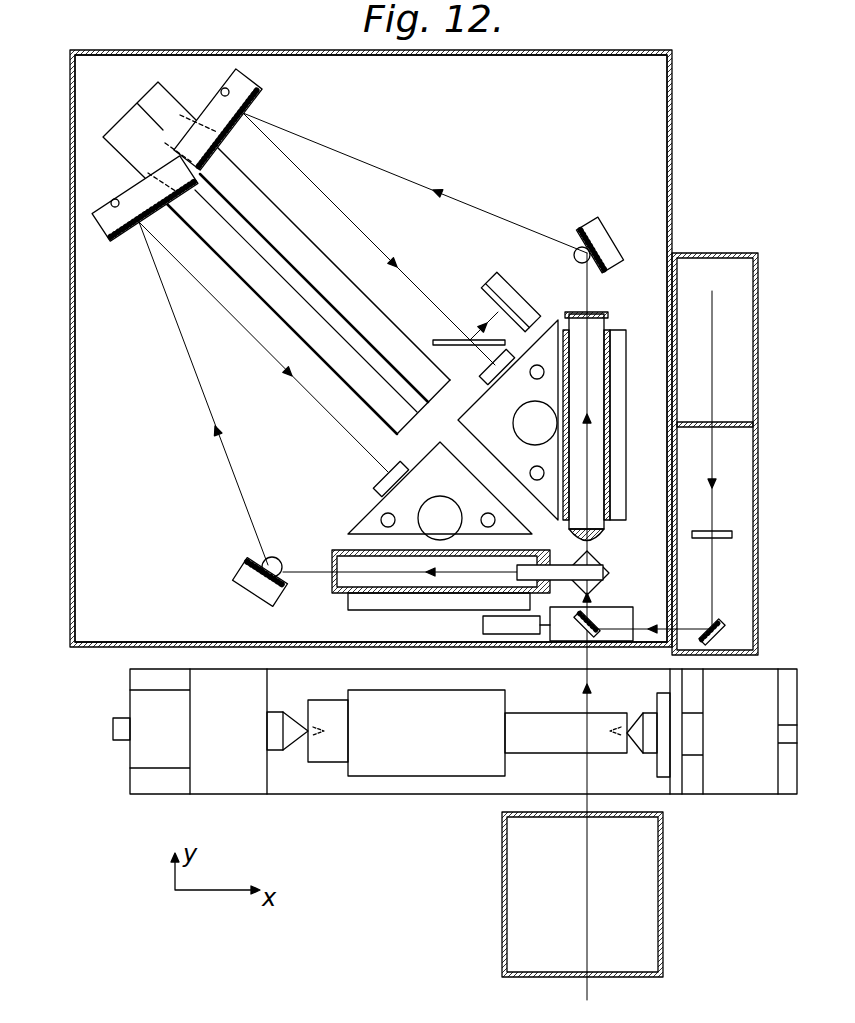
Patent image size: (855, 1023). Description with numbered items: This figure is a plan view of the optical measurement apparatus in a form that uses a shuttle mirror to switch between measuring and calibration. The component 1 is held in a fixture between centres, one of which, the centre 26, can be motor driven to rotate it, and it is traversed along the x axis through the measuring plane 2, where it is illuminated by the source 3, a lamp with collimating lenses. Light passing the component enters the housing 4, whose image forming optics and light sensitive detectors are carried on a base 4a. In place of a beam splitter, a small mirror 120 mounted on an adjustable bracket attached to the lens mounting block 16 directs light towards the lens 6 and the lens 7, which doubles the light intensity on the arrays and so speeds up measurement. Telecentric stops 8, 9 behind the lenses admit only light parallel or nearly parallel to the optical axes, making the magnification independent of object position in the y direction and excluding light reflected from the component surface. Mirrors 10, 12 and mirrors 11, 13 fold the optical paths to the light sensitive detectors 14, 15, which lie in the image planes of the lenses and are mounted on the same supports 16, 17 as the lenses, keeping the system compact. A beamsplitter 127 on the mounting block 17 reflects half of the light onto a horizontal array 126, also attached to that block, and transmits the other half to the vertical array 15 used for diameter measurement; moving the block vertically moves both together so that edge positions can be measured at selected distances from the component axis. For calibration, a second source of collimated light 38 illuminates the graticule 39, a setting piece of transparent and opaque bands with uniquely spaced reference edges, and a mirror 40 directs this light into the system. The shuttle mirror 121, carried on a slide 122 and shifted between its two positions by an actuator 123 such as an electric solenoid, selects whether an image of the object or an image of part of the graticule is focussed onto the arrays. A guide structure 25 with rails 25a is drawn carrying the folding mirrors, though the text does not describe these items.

The component 1 is at (415, 753).
The measuring plane 2 is at (587, 995).
The source 3 is at (502, 887).
The housing 4 is at (107, 644).
The base 4a is at (132, 560).
The lens 6 is at (578, 583).
The lens 7 is at (594, 532).
The telecentric stop 8 is at (332, 568).
The telecentric stop 9 is at (591, 313).
The mirror 10 is at (282, 590).
The mirror 11 is at (582, 230).
The mirror 12 is at (178, 203).
The mirror 13 is at (212, 158).
The light sensitive detector 14 is at (393, 487).
The light sensitive detector 15 is at (488, 380).
The support 16 is at (435, 465).
The support 17 is at (482, 410).
The mirror mount 25 is at (172, 122).
The guide rails 25a is at (290, 316).
The centre 26 is at (240, 790).
The second source of collimated light 38 is at (729, 295).
The graticule 39 is at (722, 530).
The mirror 40 is at (722, 644).
The small mirror 120 is at (606, 578).
The shuttle mirror 121 is at (566, 641).
The slide 122 is at (611, 641).
The actuator 123 is at (483, 625).
The horizontal array 126 is at (492, 287).
The beamsplitter 127 is at (436, 338).